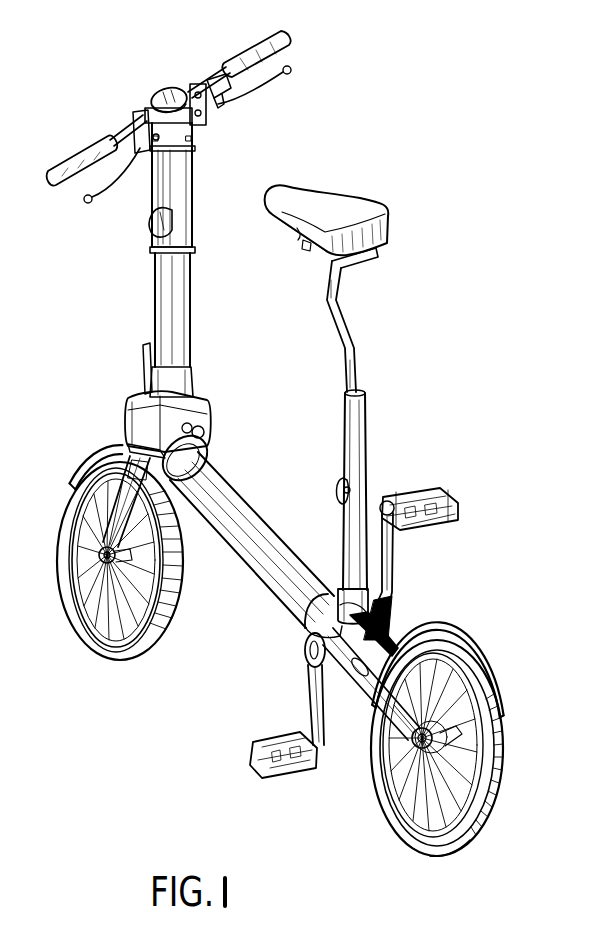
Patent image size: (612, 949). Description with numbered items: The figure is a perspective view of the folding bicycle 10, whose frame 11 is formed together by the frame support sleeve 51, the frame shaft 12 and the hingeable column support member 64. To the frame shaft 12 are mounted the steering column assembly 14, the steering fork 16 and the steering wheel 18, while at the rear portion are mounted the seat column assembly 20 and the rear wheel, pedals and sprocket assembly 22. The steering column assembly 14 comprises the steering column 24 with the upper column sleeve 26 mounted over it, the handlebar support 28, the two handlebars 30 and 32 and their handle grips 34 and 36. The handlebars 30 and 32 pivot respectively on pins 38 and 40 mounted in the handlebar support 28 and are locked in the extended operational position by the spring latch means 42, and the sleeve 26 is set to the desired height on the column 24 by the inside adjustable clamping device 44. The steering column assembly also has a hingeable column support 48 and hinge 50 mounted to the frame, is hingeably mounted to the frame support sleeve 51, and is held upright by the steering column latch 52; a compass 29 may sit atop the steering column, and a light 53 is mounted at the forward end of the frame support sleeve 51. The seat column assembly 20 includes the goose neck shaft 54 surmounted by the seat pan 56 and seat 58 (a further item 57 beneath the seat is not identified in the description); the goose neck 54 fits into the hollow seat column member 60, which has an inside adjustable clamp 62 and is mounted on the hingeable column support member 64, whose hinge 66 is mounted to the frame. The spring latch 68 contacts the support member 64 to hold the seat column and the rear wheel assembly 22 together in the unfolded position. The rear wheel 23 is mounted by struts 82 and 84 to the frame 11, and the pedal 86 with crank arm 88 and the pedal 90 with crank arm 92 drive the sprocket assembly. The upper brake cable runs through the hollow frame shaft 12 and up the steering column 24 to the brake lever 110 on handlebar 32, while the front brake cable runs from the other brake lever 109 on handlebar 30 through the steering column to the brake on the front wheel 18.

The folding bicycle 10 is at (232, 615).
The frame 11 is at (196, 588).
The frame shaft 12 is at (240, 542).
The steering column assembly 14 is at (152, 309).
The steering fork 16 is at (122, 503).
The steering wheel 18 is at (59, 557).
The seat column assembly 20 is at (378, 440).
The rear wheel, pedals and sprocket assembly 22 is at (515, 708).
The rear wheel 23 is at (478, 828).
The steering column 24 is at (183, 328).
The upper column sleeve 26 is at (191, 212).
The handlebar support 28 is at (195, 128).
The compass 29 is at (170, 83).
The handlebar 30 is at (137, 147).
The handlebar 32 is at (206, 80).
The handle grip 34 is at (95, 147).
The handle grip 36 is at (277, 40).
The pin 38 is at (195, 150).
The pin 40 is at (217, 97).
The spring latch means 42 is at (142, 156).
The inside adjustable clamping device 44 is at (150, 223).
The hingeable column support 48 is at (190, 403).
The hinge 50 is at (210, 430).
The frame support sleeve 51 is at (130, 437).
The steering column latch 52 is at (143, 363).
The light 53 is at (127, 420).
The goose neck shaft 54 is at (347, 323).
The seat pan 56 is at (296, 232).
The seat clamp 57 is at (308, 249).
The seat 58 is at (362, 201).
The hollow seat column member 60 is at (360, 468).
The inside adjustable clamp 62 is at (333, 472).
The hingeable column support member 64 is at (338, 592).
The hinge 66 is at (298, 628).
The spring latch 68 is at (372, 611).
The strut 82 is at (372, 707).
The strut 84 is at (492, 757).
The pedal 86 is at (262, 748).
The crank arm 88 is at (308, 695).
The pedal 90 is at (447, 500).
The crank arm 92 is at (391, 573).
The brake lever 109 is at (84, 200).
The brake lever 110 is at (275, 80).